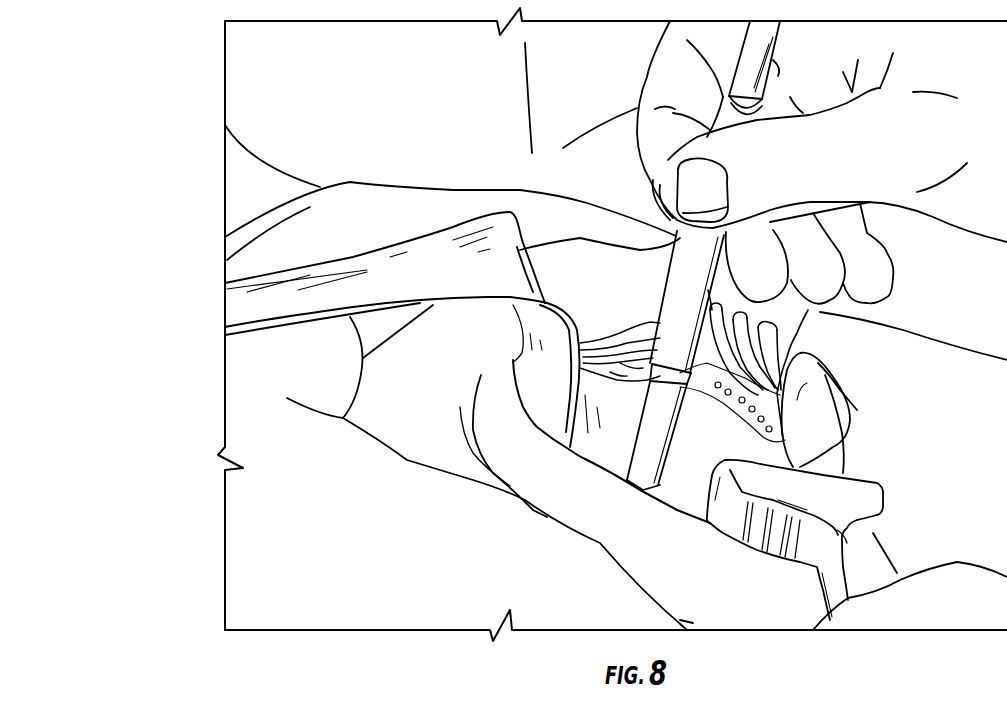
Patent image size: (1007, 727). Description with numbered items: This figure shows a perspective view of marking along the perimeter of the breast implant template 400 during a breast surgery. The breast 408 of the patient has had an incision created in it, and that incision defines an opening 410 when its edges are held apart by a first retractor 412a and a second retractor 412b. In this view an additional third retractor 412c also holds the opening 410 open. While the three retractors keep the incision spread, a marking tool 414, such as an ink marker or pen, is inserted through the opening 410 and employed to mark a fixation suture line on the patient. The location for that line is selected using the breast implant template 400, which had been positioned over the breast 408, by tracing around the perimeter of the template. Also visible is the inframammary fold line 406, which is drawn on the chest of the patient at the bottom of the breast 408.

The breast implant template 400 is at (607, 397).
The inframammary fold line 406 is at (473, 432).
The breast 408 is at (857, 414).
The opening 410 is at (587, 460).
The first retractor 412a is at (860, 495).
The second retractor 412b is at (793, 303).
The third retractor 412c is at (322, 273).
The marking tool 414 is at (640, 483).